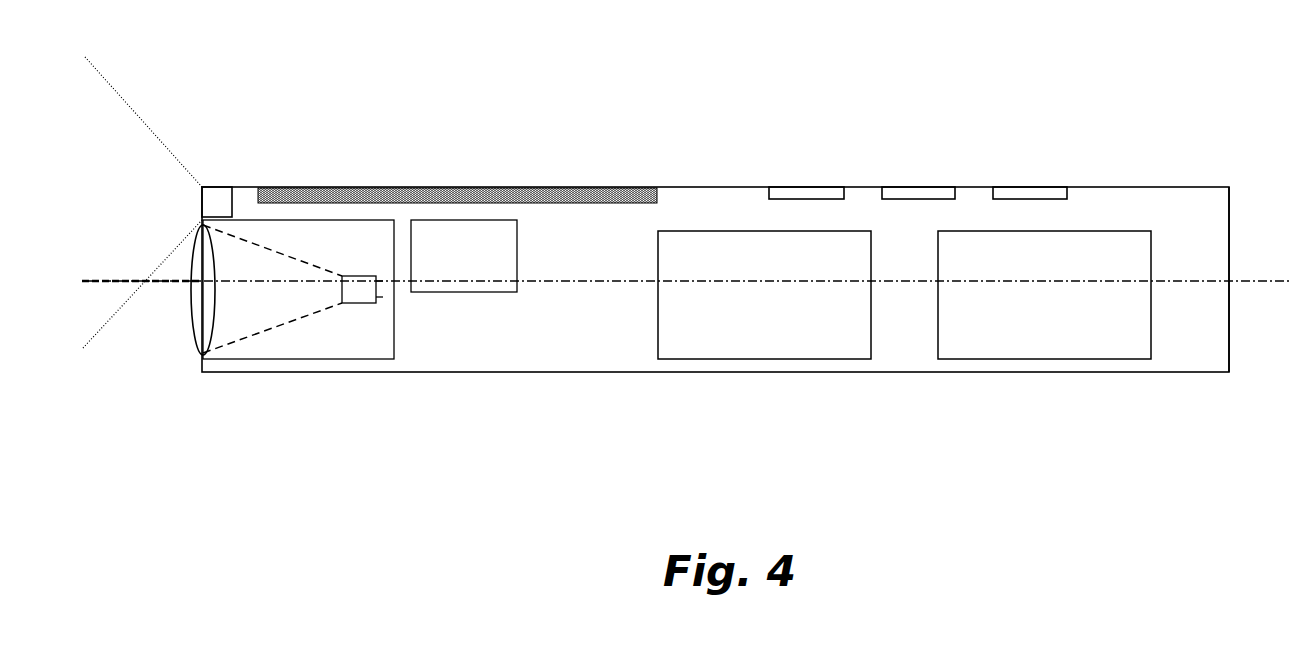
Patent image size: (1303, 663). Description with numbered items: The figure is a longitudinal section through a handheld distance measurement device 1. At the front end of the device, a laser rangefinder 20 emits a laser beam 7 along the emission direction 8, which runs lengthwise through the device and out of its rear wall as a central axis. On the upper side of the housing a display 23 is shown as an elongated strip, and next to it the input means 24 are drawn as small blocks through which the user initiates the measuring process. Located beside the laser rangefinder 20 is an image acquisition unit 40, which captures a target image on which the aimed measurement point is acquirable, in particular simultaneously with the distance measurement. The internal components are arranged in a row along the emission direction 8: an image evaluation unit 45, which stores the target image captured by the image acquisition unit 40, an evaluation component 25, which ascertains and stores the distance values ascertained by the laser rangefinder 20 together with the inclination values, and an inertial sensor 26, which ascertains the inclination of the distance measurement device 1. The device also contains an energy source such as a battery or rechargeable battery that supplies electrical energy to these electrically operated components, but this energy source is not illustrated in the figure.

The handheld distance measurement device 1 is at (715, 312).
The laser beam 7 is at (123, 202).
The emission direction 8 is at (1179, 252).
The laser rangefinder 20 is at (137, 307).
The display 23 is at (457, 146).
The input means 24 is at (918, 147).
The evaluation component 25 is at (769, 331).
The inertial sensor 26 is at (1052, 331).
The image acquisition unit 40 is at (264, 153).
The image evaluation unit 45 is at (522, 326).